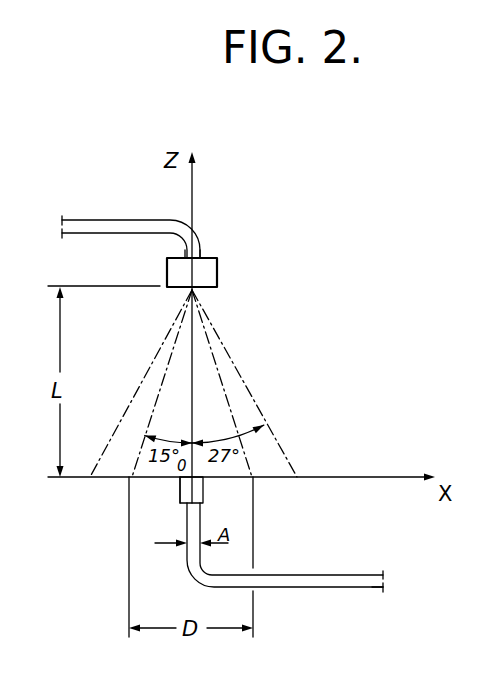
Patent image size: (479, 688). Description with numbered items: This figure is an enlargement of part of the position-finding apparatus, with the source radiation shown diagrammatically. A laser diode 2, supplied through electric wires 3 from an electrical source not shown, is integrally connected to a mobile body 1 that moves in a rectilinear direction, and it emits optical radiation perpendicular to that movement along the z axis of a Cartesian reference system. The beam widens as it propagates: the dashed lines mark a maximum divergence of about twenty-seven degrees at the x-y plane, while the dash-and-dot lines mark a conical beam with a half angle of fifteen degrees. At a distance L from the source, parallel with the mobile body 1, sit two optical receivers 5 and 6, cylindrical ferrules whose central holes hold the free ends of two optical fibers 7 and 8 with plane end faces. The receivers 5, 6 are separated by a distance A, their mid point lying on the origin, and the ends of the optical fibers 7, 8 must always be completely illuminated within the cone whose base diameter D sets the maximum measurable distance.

The mobile body 1 is at (205, 257).
The laser diode 2 is at (206, 273).
The electric wires 3 is at (93, 220).
The optical receiver 5 is at (203, 492).
The optical receiver 6 is at (180, 492).
The optical fiber 7 is at (367, 574).
The optical fiber 8 is at (369, 589).